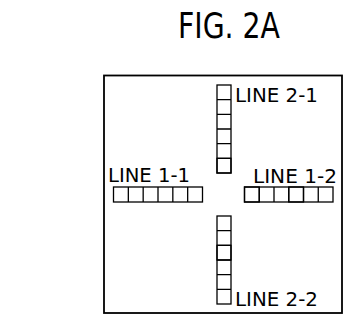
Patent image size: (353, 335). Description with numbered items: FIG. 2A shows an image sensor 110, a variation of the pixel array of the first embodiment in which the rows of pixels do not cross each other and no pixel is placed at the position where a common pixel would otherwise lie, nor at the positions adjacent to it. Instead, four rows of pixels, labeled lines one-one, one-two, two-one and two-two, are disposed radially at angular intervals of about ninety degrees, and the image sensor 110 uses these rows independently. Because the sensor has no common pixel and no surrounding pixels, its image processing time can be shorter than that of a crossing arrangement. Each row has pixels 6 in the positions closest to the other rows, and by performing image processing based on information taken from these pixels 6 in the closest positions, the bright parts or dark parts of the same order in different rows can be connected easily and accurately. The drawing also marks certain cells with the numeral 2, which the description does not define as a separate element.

The image sensor 110 is at (104, 95).
The pixel 6 is at (222, 166).
The pixel 2 is at (293, 192).